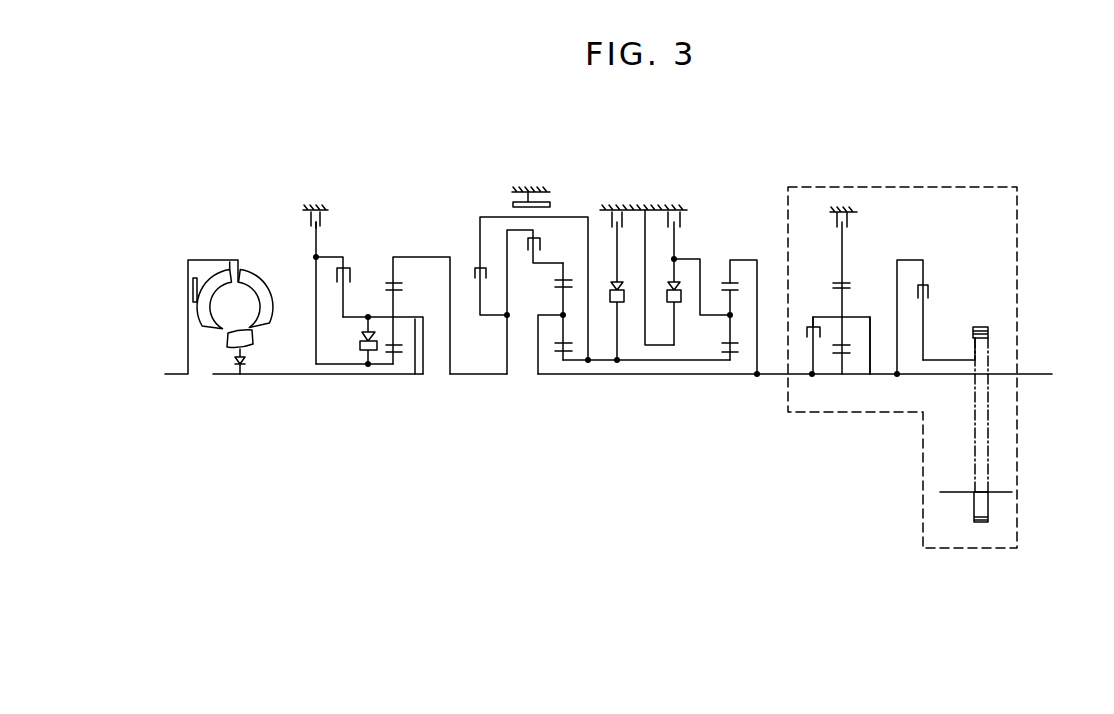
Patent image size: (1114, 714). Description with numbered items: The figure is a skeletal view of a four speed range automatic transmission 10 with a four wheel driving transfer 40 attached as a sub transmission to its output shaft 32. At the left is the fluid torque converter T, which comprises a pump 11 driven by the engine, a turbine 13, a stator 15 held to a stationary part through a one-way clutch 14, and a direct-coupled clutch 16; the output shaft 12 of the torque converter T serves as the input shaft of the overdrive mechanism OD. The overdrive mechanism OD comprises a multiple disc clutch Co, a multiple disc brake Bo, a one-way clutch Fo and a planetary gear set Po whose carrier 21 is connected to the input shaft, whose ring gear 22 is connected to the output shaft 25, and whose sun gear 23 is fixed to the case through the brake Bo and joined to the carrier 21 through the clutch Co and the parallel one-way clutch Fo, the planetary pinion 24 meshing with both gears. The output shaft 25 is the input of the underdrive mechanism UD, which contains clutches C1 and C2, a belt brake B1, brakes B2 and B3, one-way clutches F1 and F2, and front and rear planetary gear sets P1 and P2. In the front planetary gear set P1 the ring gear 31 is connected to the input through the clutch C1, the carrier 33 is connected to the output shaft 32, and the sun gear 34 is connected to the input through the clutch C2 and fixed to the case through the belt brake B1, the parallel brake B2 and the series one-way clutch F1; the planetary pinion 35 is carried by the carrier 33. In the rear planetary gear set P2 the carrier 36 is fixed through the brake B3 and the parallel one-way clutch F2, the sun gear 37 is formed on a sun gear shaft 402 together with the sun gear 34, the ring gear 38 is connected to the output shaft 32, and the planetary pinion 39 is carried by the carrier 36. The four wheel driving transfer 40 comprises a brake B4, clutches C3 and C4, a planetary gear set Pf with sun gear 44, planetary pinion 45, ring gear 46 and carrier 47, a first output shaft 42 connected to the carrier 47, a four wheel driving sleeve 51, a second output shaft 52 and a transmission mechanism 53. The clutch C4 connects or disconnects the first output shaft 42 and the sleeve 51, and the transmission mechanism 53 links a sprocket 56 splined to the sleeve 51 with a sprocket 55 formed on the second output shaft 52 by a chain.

The four speed range automatic transmission 10 is at (301, 209).
The pump 11 is at (270, 327).
The output shaft of the torque converter 12 is at (277, 375).
The turbine 13 is at (210, 340).
The one-way clutch 14 is at (236, 350).
The stator 15 is at (218, 342).
The direct-coupled clutch 16 is at (185, 266).
The carrier 21 is at (415, 330).
The ring gear 22 is at (390, 279).
The sun gear 23 is at (395, 360).
The planetary pinion 24 is at (392, 334).
The output shaft of the overdrive mechanism 25 is at (483, 375).
The ring gear 31 is at (565, 278).
The output shaft 32 is at (776, 377).
The carrier 33 is at (540, 338).
The sun gear 34 is at (558, 328).
The planetary pinion 35 is at (587, 364).
The carrier 36 is at (722, 336).
The sun gear 37 is at (730, 361).
The ring gear 38 is at (722, 282).
The planetary pinion 39 is at (762, 378).
The four wheel driving transfer 40 is at (952, 187).
The first output shaft 42 is at (1028, 374).
The sun gear 44 is at (841, 357).
The planetary pinion 45 is at (869, 334).
The ring gear 46 is at (838, 282).
The carrier 47 is at (816, 330).
The four wheel driving sleeve 51 is at (946, 359).
The second output shaft 52 is at (998, 490).
The transmission mechanism 53 is at (998, 507).
The sprocket 55 is at (978, 523).
The sprocket 56 is at (990, 332).
The sun gear shaft 402 is at (645, 359).
The fluid torque converter T is at (236, 266).
The overdrive mechanism OD is at (320, 208).
The underdrive mechanism UD is at (689, 209).
The multiple disc brake Bo is at (328, 207).
The multiple disc clutch Co is at (345, 264).
The one-way clutch Fo is at (360, 346).
The planetary gear set Po is at (400, 309).
The belt brake B1 is at (527, 192).
The multiple disc brake B2 is at (620, 210).
The multiple disc brake B3 is at (677, 210).
The brake B4 is at (855, 212).
The multiple disc clutch C1 is at (540, 230).
The multiple disc clutch C2 is at (479, 266).
The clutch C3 is at (812, 339).
The clutch C4 is at (929, 286).
The one-way clutch F1 is at (610, 306).
The one-way clutch F2 is at (672, 306).
The front planetary gear set P1 is at (551, 337).
The rear planetary gear set P2 is at (732, 327).
The planetary gear set Pf is at (853, 306).